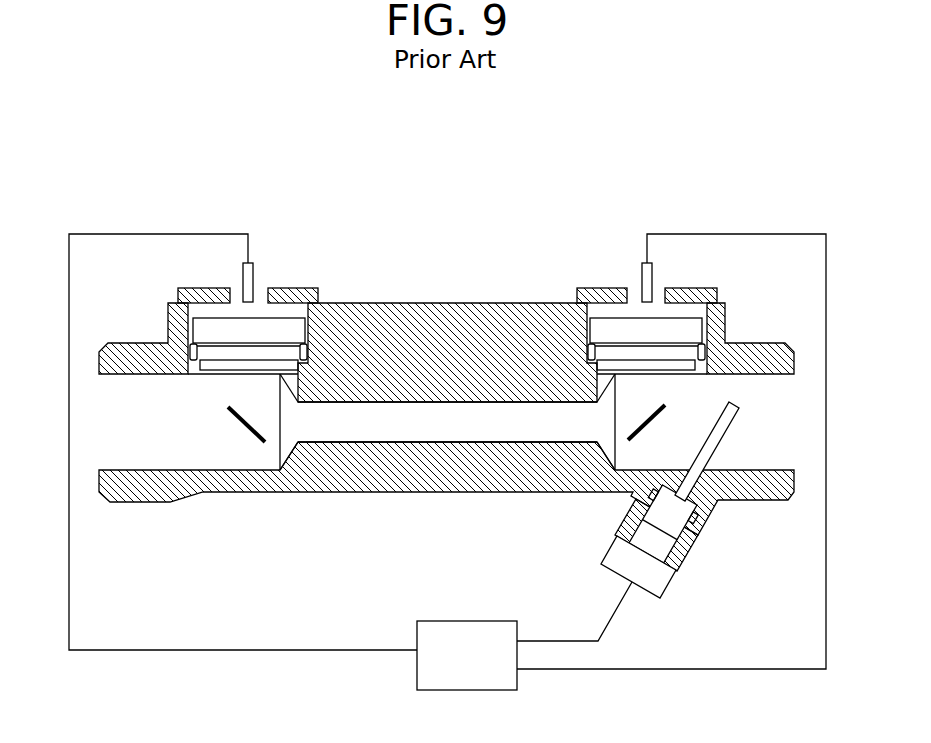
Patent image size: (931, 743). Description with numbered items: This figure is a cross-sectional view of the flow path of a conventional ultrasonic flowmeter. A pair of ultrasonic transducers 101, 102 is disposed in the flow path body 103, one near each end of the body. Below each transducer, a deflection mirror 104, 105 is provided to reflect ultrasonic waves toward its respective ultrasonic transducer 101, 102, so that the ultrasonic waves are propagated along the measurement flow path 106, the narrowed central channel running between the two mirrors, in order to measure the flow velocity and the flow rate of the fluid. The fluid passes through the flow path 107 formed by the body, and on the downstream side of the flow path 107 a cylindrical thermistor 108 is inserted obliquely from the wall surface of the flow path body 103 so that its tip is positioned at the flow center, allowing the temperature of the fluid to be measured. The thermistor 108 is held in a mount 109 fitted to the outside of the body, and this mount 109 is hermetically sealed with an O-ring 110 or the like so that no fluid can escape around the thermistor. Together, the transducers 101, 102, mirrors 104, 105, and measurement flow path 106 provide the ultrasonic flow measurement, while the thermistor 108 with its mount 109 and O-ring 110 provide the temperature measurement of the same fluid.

The ultrasonic transducer 101 is at (270, 330).
The ultrasonic transducer 102 is at (627, 330).
The flow path body 103 is at (415, 348).
The deflection mirror 104 is at (245, 425).
The deflection mirror 105 is at (635, 432).
The measurement flow path 106 is at (475, 423).
The flow path 107 is at (165, 407).
The cylindrical thermistor 108 is at (736, 402).
The mount 109 is at (690, 517).
The O-ring 110 is at (672, 513).